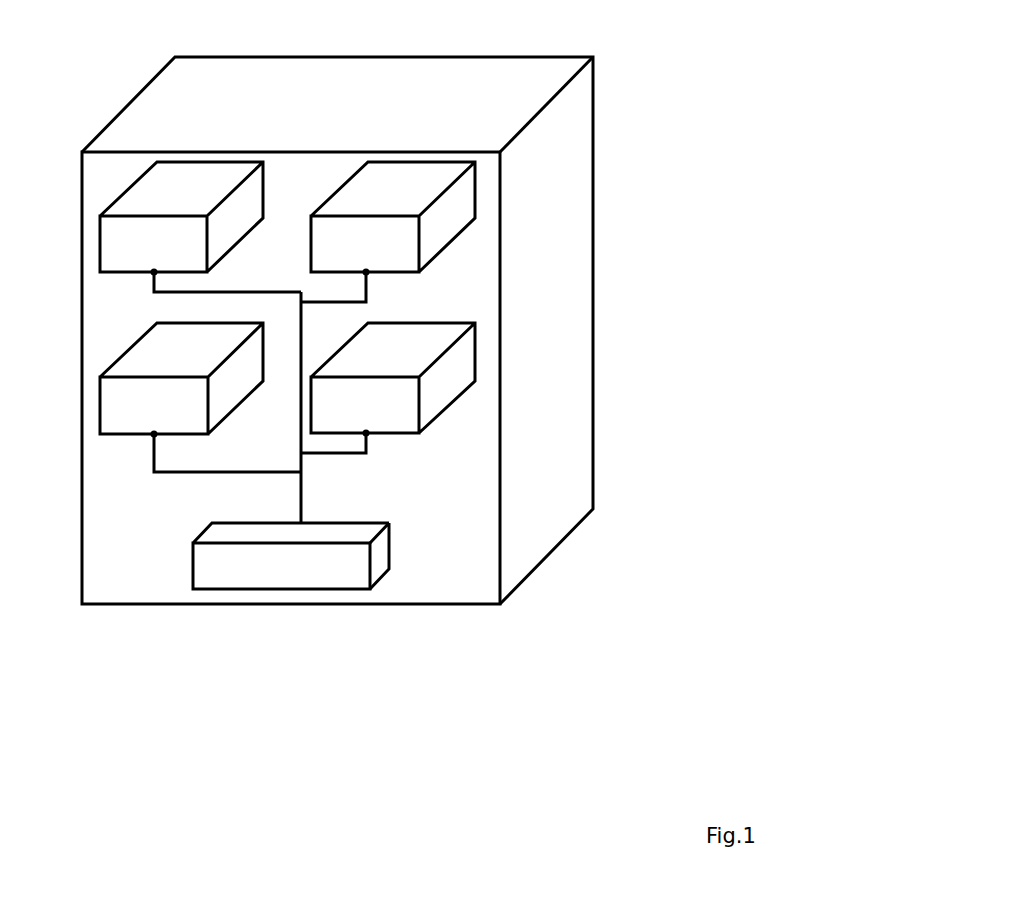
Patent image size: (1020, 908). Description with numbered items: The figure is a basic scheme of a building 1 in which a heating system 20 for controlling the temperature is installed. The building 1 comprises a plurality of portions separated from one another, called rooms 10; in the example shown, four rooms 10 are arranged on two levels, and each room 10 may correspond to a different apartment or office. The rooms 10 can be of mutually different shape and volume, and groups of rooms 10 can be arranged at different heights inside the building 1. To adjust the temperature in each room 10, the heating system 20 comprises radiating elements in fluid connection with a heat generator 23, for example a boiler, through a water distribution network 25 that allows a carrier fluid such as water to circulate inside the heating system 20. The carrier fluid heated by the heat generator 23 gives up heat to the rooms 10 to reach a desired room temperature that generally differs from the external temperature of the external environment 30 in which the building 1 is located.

The building 1 is at (95, 133).
The room 10 is at (475, 189).
The heating system 20 is at (400, 626).
The heat generator 23 is at (372, 565).
The water distribution network 25 is at (303, 488).
The external environment 30 is at (683, 275).